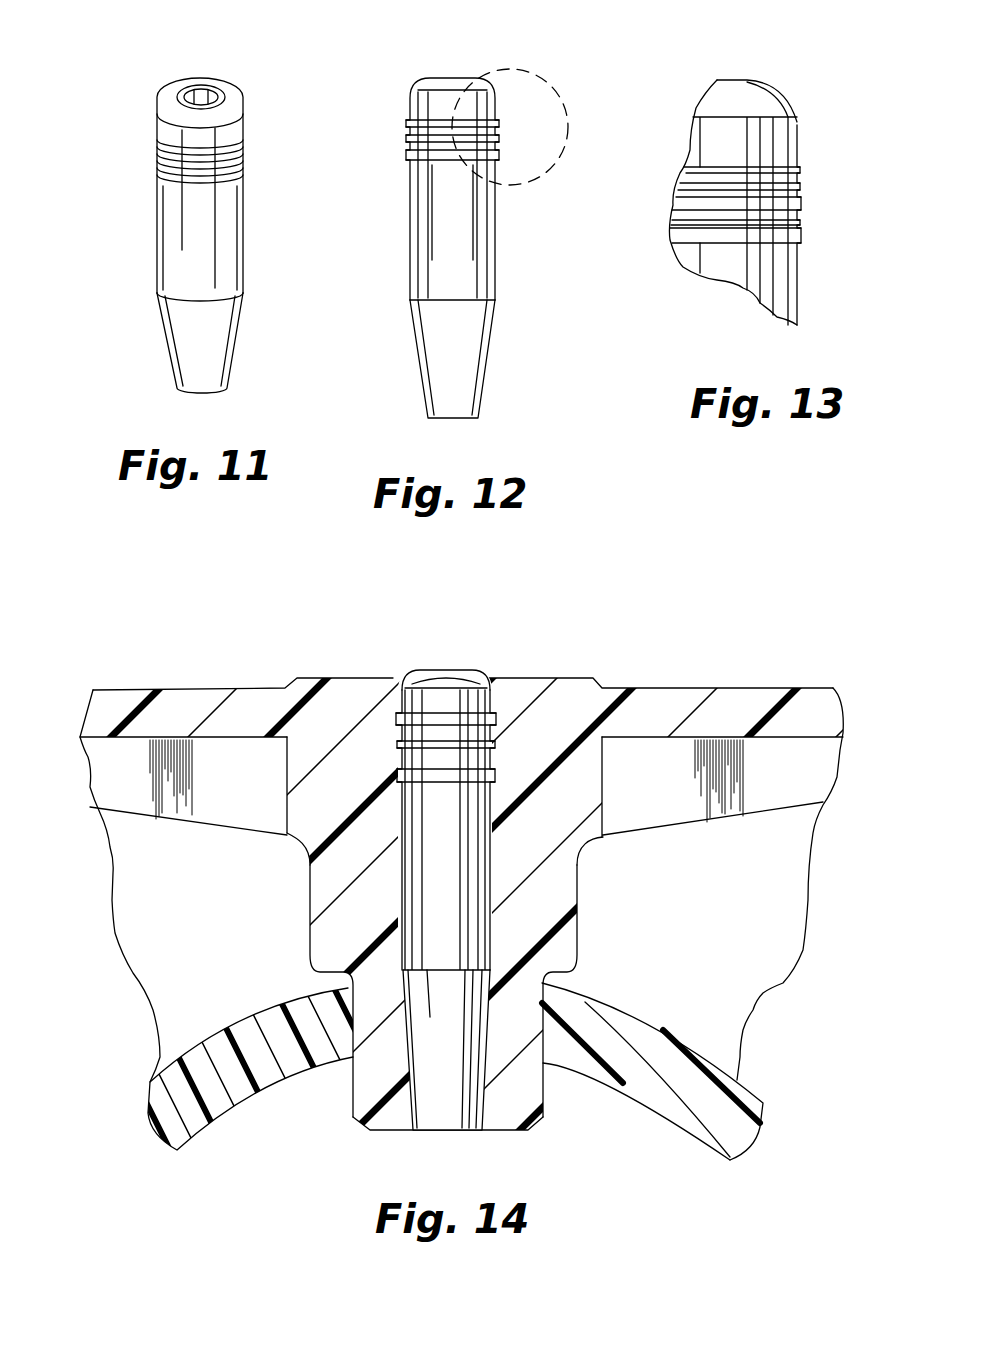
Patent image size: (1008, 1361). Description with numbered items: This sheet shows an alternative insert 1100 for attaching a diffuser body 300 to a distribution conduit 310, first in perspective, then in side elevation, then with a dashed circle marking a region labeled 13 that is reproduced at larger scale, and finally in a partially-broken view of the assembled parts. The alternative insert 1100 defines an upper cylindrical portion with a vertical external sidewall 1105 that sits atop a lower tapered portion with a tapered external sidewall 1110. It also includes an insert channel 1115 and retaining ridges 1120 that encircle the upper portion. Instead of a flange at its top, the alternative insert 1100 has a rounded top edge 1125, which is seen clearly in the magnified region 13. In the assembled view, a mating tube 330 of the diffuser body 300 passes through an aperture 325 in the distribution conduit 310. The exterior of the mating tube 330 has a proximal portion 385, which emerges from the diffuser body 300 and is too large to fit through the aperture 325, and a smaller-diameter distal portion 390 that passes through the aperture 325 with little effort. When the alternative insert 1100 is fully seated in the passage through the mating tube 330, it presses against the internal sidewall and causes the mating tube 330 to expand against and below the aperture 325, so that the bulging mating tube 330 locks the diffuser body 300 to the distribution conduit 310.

In FIG. 11, the alternative insert 1100 is at (133, 180).
In FIG. 12, the alternative insert 1100 is at (385, 115).
In FIG. 14, the alternative insert 1100 is at (478, 870).
In FIG. 12, the vertical external sidewall 1105 is at (412, 280).
In FIG. 13, the vertical external sidewall 1105 is at (800, 138).
In FIG. 14, the vertical external sidewall 1105 is at (453, 865).
In FIG. 12, the tapered external sidewall 1110 is at (417, 376).
In FIG. 14, the tapered external sidewall 1110 is at (437, 1058).
In FIG. 11, the insert channel 1115 is at (202, 92).
In FIG. 14, the insert channel 1115 is at (440, 662).
In FIG. 12, the retaining ridges 1120 is at (402, 140).
In FIG. 13, the retaining ridges 1120 is at (820, 205).
In FIG. 14, the retaining ridges 1120 is at (503, 752).
In FIG. 12, the rounded top edge 1125 is at (432, 88).
In FIG. 13, the rounded top edge 1125 is at (793, 92).
In FIG. 12, the detail region shown in FIG. 13 is at (553, 85).
In FIG. 14, the diffuser body 300 is at (504, 925).
In FIG. 14, the distribution conduit 310 is at (640, 1012).
In FIG. 14, the aperture 325 is at (544, 1064).
In FIG. 14, the mating tube 330 is at (603, 910).
In FIG. 14, the proximal portion 385 is at (556, 925).
In FIG. 14, the distal portion 390 is at (528, 1123).